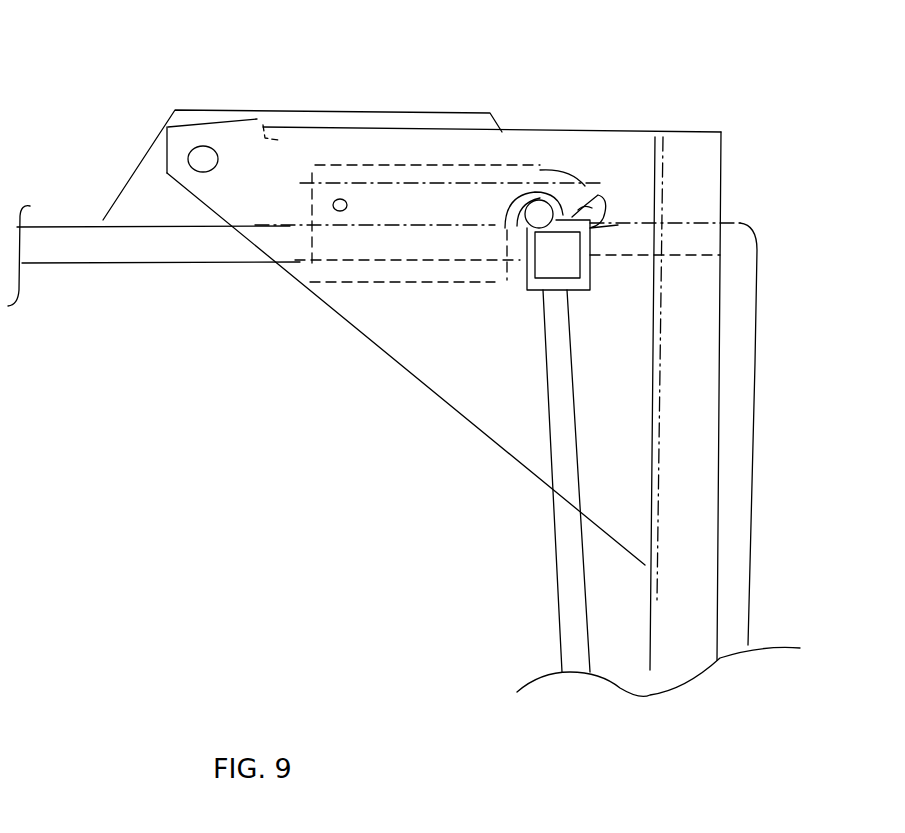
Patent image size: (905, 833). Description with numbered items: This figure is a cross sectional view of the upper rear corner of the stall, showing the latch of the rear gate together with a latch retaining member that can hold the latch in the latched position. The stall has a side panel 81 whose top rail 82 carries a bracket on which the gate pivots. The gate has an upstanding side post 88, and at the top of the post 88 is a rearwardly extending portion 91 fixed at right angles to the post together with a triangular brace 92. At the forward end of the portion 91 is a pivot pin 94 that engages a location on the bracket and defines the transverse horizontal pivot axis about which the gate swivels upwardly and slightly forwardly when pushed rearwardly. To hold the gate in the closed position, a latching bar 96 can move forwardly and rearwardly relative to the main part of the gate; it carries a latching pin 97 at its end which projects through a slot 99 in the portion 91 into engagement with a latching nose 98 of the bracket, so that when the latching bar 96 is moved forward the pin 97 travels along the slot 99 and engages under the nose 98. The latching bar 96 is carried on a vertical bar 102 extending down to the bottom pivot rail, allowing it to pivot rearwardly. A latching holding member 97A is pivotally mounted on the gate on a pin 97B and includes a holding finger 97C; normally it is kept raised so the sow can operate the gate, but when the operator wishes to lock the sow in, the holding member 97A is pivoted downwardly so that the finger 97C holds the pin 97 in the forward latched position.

The side panel 81 is at (757, 210).
The top rail 82 is at (50, 242).
The upstanding side post 88 is at (692, 417).
The rearwardly extending portion 91 is at (352, 157).
The triangular brace 92 is at (458, 400).
The pivot pin 94 is at (204, 158).
The latching bar 96 is at (527, 280).
The latching pin 97 is at (543, 180).
The latching holding member 97A is at (338, 273).
The pin 97B is at (333, 209).
The holding finger 97C is at (578, 210).
The latching nose 98 is at (543, 185).
The slot 99 is at (603, 193).
The vertical bar 102 is at (562, 375).